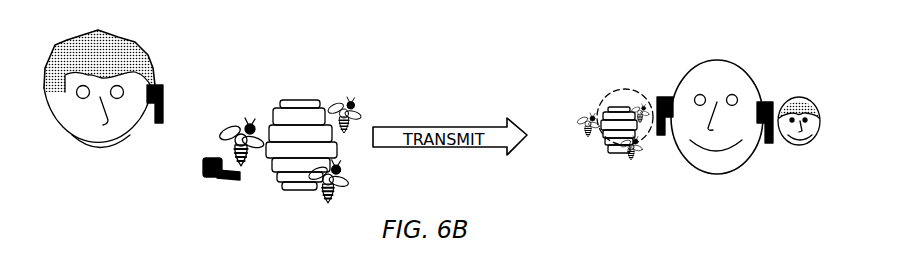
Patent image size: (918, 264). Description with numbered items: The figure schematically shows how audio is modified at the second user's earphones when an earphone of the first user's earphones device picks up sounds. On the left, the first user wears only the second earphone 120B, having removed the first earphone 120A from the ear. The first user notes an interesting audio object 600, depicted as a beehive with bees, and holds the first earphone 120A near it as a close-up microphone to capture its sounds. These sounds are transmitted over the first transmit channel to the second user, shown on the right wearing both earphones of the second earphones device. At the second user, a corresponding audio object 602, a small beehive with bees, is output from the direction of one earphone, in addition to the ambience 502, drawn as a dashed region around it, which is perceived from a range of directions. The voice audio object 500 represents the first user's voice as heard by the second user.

The first earphone 120A is at (203, 167).
The second earphone 120B is at (163, 96).
The audio object 600 is at (307, 100).
The ambience 502 is at (641, 88).
The corresponding audio object 602 is at (602, 109).
The voice audio object 500 is at (801, 92).